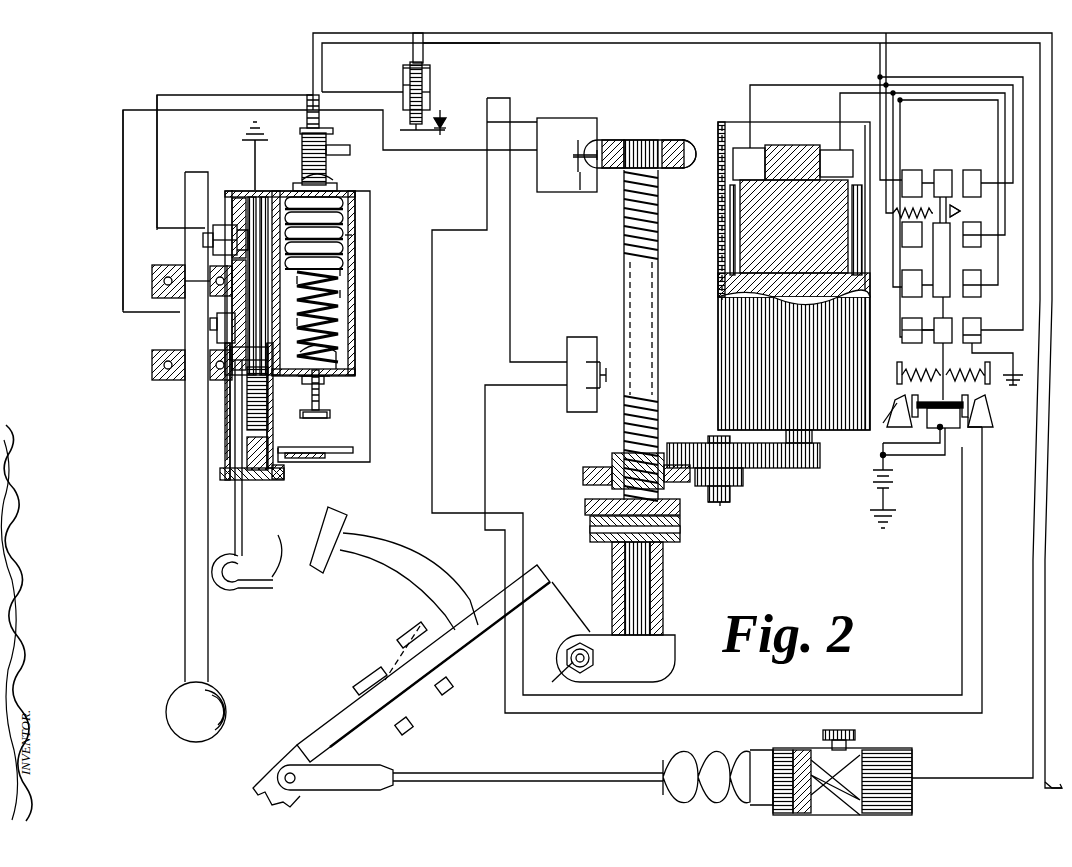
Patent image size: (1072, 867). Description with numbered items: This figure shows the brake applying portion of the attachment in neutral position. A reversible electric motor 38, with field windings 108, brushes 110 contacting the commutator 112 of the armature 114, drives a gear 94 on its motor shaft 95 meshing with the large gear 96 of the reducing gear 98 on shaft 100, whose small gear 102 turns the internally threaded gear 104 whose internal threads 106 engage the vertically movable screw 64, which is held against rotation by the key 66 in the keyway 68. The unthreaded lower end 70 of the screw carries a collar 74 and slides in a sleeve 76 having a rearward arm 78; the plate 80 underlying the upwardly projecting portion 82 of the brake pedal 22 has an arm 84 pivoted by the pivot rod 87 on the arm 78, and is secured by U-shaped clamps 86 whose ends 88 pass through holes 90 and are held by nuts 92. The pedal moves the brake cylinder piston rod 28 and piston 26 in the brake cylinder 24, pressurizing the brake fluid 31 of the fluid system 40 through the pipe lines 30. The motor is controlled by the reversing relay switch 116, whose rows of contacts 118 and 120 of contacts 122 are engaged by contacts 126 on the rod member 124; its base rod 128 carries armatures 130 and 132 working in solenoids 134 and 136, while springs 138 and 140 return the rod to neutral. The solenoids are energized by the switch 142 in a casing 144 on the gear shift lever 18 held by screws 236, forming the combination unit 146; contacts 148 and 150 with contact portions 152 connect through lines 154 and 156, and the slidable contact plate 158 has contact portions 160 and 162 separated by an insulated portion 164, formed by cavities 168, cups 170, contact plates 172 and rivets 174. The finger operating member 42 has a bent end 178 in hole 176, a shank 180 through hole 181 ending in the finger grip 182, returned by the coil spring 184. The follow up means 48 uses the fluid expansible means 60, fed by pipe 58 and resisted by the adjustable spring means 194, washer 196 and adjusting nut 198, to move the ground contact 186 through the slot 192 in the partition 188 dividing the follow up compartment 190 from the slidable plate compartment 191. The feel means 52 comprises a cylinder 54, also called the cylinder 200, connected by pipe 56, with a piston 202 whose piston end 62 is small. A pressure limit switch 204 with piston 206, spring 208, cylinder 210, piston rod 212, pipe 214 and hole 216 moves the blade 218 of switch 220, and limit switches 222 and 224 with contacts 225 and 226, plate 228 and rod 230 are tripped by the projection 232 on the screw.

The gear shift lever 18 is at (185, 640).
The brake pedal 22 is at (325, 575).
The brake cylinder 24 is at (915, 760).
The brake cylinder piston 26 is at (850, 750).
The brake cylinder piston rod 28 is at (565, 773).
The pipe lines 30 is at (1058, 782).
The brake fluid 31 is at (333, 148).
The motive means 38 is at (722, 328).
The fluid system 40 is at (773, 755).
The finger operating member 42 is at (243, 545).
The follow up means 48 is at (345, 212).
The feel means 52 is at (310, 438).
The cylinder 54 is at (285, 473).
The pipe 56 is at (362, 465).
The pipe 58 is at (700, 44).
The fluid expansible means 60 is at (345, 230).
The piston end 62 is at (312, 406).
The screw 64 is at (658, 405).
The key 66 is at (587, 508).
The keyway 68 is at (624, 306).
The lower end 70 is at (650, 606).
The collar 74 is at (680, 524).
The sleeve 76 is at (663, 568).
The arm 78 is at (675, 640).
The plate 80 is at (495, 600).
The portion 82 is at (380, 665).
The arm 84 is at (560, 600).
The clamps 86 is at (405, 655).
The pivot rod 87 is at (560, 667).
The ends 88 is at (412, 730).
The holes 90 is at (420, 680).
The nuts 92 is at (440, 698).
The gear 94 is at (803, 467).
The motor shaft 95 is at (812, 436).
The large gear 96 is at (743, 475).
The reducing gear 98 is at (735, 490).
The shaft 100 is at (722, 503).
The small gear 102 is at (735, 498).
The internally threaded gear 104 is at (602, 464).
The internal threads 106 is at (595, 478).
The field windings 108 is at (730, 244).
The brushes 110 is at (740, 165).
The commutator 112 is at (785, 147).
The armature 114 is at (760, 200).
The reversing relay switch 116 is at (931, 173).
The line of contacts 118 is at (906, 343).
The line of contacts 120 is at (981, 333).
The contacts 122 is at (972, 252).
The rod member 124 is at (930, 225).
The contacts 126 is at (972, 212).
The base rod 128 is at (943, 410).
The armature 130 is at (903, 419).
The armature 132 is at (932, 425).
The solenoid 134 is at (880, 455).
The solenoid 136 is at (993, 410).
The spring 138 is at (919, 369).
The spring 140 is at (968, 369).
The switch 142 is at (187, 283).
The casing 144 is at (343, 272).
The combination finger operated fluid follow up, fluid feel and operating switch 146 is at (340, 298).
The contact 148 is at (203, 238).
The contact 150 is at (217, 326).
The contact portions 152 is at (240, 213).
The line 154 is at (160, 150).
The line 156 is at (123, 140).
The slidable contact plate 158 is at (255, 195).
The contact portion 160 is at (230, 257).
The contact portion 162 is at (152, 355).
The insulated portion 164 is at (210, 292).
The cavities 168 is at (266, 152).
The cup 170 is at (234, 193).
The contact plate 172 is at (152, 262).
The rivets 174 is at (265, 200).
The hole 176 is at (247, 388).
The inwardly bent end 178 is at (247, 355).
The shank 180 is at (230, 462).
The hole 181 is at (236, 478).
The finger grip 182 is at (272, 542).
The coil spring 184 is at (225, 452).
The ground contact 186 is at (353, 252).
The partition 188 is at (330, 392).
The follow up compartment 190 is at (300, 322).
The slidable plate compartment 191 is at (125, 298).
The slot 192 is at (300, 282).
The adjustable spring means 194 is at (343, 294).
The adjusting washer 196 is at (340, 362).
The adjusting nut 198 is at (330, 416).
The cylinder 200 is at (262, 482).
The piston 202 is at (306, 448).
The pressure limit switch 204 is at (403, 80).
The piston 206 is at (430, 72).
The spring 208 is at (403, 90).
The cylinder 210 is at (412, 45).
The piston rod 212 is at (430, 90).
The pipe 214 is at (470, 48).
The hole 216 is at (446, 121).
The movable blade 218 is at (442, 131).
The switch 220 is at (416, 128).
The limit switch 222 is at (602, 143).
The limit switch 224 is at (602, 348).
The contact 225 is at (584, 141).
The contact 226 is at (590, 170).
The movable connecting plate 228 is at (575, 148).
The rod 230 is at (610, 140).
The projection 232 is at (684, 140).
The screws 236 is at (170, 370).